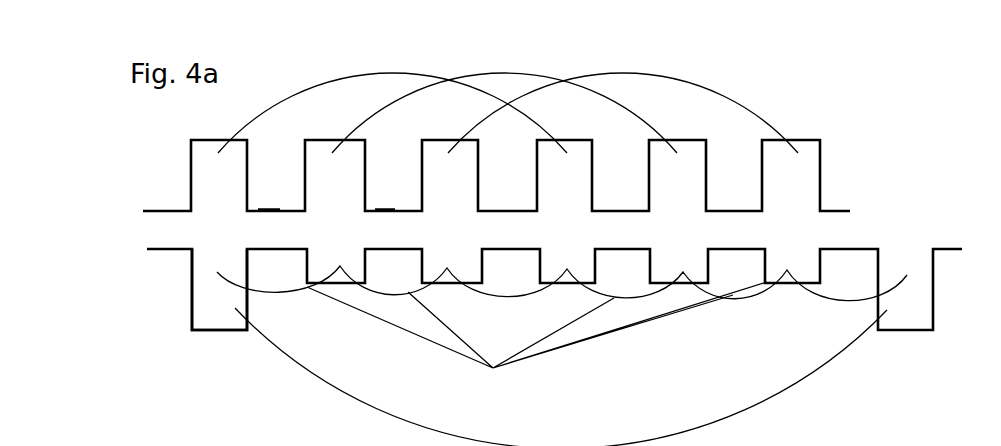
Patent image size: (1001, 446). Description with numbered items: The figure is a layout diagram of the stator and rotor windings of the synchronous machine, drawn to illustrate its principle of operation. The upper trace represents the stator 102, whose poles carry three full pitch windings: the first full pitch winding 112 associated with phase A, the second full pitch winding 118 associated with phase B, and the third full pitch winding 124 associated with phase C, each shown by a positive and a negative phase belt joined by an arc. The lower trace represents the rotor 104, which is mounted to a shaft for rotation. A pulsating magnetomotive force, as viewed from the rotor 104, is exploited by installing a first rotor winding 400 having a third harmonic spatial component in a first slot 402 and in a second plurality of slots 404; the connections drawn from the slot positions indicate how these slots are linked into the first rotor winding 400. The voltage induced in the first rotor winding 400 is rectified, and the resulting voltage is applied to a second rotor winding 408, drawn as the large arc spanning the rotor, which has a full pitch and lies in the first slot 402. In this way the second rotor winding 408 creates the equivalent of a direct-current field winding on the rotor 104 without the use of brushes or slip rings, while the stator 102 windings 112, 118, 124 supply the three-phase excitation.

The stator 102 is at (185, 195).
The rotor 104 is at (158, 250).
The first full pitch winding 112 is at (318, 83).
The second full pitch winding 118 is at (702, 87).
The third full pitch winding 124 is at (507, 70).
The first rotor winding 400 is at (537, 340).
The first slot 402 is at (188, 307).
The second plurality of slots 404 is at (535, 248).
The second rotor winding 408 is at (817, 370).